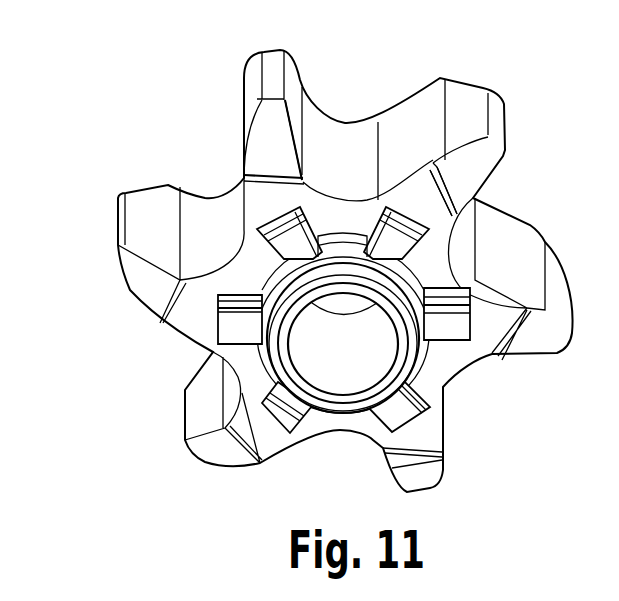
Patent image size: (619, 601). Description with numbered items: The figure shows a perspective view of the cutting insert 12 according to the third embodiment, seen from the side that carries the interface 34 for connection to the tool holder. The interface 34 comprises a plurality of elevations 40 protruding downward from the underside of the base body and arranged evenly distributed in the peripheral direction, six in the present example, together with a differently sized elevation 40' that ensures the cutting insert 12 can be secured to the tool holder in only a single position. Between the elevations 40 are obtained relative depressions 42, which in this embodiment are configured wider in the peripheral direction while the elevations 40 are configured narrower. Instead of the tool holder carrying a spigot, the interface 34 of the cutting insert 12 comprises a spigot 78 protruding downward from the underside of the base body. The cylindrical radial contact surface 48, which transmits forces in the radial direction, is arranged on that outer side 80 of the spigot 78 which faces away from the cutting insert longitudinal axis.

The cutting insert 12 is at (143, 110).
The interface 34 is at (453, 400).
The elevations 40 is at (285, 359).
The elevation 40' is at (386, 445).
The depressions 42 is at (340, 225).
The radial contact surface 48 is at (472, 216).
The outer side 80 is at (472, 216).
The spigot 78 is at (413, 355).